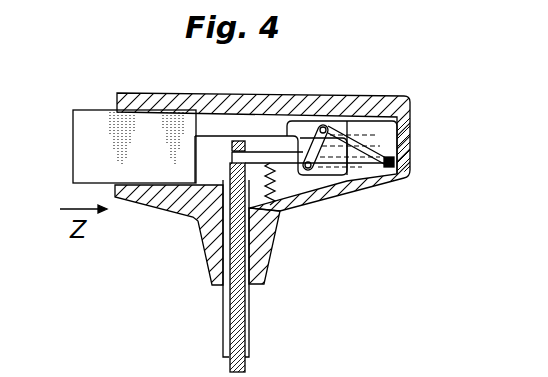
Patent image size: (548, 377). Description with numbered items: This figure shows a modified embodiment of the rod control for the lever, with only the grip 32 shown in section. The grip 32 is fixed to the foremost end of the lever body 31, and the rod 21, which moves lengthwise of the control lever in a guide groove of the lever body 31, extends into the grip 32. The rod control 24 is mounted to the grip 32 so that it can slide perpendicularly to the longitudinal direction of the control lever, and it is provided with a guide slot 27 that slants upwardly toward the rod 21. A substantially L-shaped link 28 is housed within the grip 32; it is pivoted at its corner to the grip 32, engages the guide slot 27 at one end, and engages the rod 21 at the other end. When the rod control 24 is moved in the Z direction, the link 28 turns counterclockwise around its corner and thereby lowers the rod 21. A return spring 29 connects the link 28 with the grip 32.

The rod 21 is at (237, 306).
The rod control 24 is at (149, 126).
The guide slot 27 is at (326, 127).
The link 28 is at (365, 144).
The return spring 29 is at (273, 184).
The lever body 31 is at (248, 336).
The grip 32 is at (411, 132).